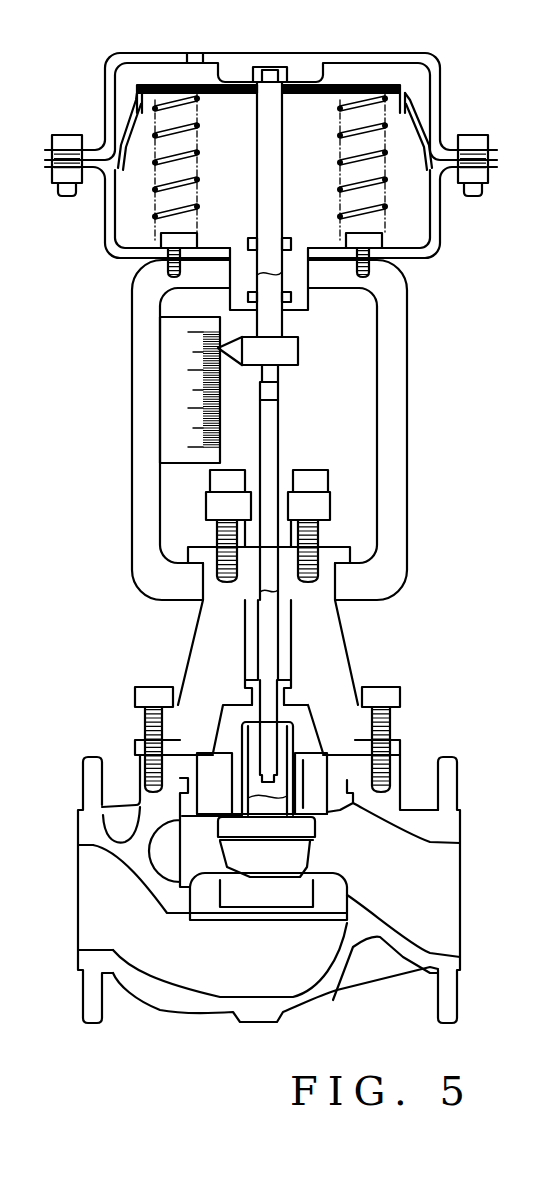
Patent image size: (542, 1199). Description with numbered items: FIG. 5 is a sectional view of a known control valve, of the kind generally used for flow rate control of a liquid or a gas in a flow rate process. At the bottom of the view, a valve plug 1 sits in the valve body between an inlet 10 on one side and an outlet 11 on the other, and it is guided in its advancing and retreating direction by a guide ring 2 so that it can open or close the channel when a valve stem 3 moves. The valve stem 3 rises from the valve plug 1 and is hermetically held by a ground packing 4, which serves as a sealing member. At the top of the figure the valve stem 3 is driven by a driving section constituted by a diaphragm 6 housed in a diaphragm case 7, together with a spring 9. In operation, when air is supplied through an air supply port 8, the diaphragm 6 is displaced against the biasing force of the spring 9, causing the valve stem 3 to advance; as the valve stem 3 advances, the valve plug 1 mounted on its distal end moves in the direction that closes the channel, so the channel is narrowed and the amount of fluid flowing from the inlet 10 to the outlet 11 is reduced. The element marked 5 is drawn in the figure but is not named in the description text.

The valve plug 1 is at (250, 862).
The guide ring 2 is at (223, 765).
The valve stem 3 is at (270, 648).
The ground packing 4 is at (248, 623).
The travel indicator scale 5 is at (178, 388).
The diaphragm 6 is at (417, 121).
The diaphragm case 7 is at (436, 53).
The air supply port 8 is at (195, 51).
The spring 9 is at (150, 215).
The inlet 10 is at (107, 899).
The outlet 11 is at (427, 898).